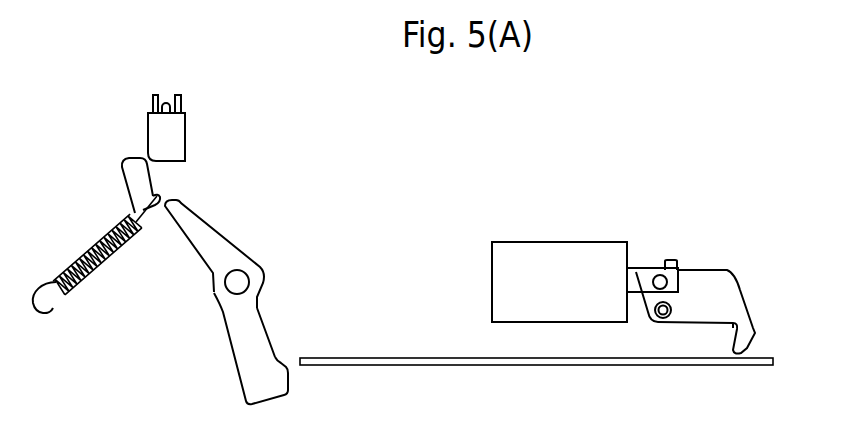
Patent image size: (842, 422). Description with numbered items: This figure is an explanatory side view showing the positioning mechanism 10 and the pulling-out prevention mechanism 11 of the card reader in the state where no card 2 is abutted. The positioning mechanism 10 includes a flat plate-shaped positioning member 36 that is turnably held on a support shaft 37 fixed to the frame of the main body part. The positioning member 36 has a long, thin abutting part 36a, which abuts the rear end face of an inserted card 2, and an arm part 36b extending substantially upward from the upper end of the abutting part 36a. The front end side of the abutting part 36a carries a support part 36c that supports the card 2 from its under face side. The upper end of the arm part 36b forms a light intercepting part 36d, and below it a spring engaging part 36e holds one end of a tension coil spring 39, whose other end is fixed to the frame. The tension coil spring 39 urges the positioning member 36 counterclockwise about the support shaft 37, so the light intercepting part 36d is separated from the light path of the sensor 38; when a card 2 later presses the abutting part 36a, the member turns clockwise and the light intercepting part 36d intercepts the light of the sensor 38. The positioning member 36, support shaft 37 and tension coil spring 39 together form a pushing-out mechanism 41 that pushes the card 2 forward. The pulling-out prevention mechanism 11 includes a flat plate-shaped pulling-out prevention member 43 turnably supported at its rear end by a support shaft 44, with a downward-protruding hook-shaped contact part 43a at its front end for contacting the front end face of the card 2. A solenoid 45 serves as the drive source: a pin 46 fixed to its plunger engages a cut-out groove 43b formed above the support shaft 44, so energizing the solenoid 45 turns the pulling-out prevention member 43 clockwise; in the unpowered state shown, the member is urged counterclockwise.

The card 2 is at (412, 358).
The positioning mechanism 10 is at (310, 137).
The pulling-out prevention mechanism 11 is at (744, 145).
The positioning member 36 is at (188, 281).
The abutting part 36a is at (232, 348).
The arm part 36b is at (227, 240).
The support part 36c is at (278, 360).
The light intercepting part 36d is at (124, 177).
The spring engaging part 36e is at (160, 200).
The support shaft 37 is at (249, 282).
The sensor 38 is at (148, 139).
The tension coil spring 39 is at (66, 272).
The pushing-out mechanism 41 is at (120, 333).
The pulling-out prevention member 43 is at (708, 270).
The contact part 43a is at (757, 329).
The cut-out groove 43b is at (662, 262).
The support shaft 44 is at (663, 319).
The solenoid 45 is at (562, 242).
The pin 46 is at (658, 274).